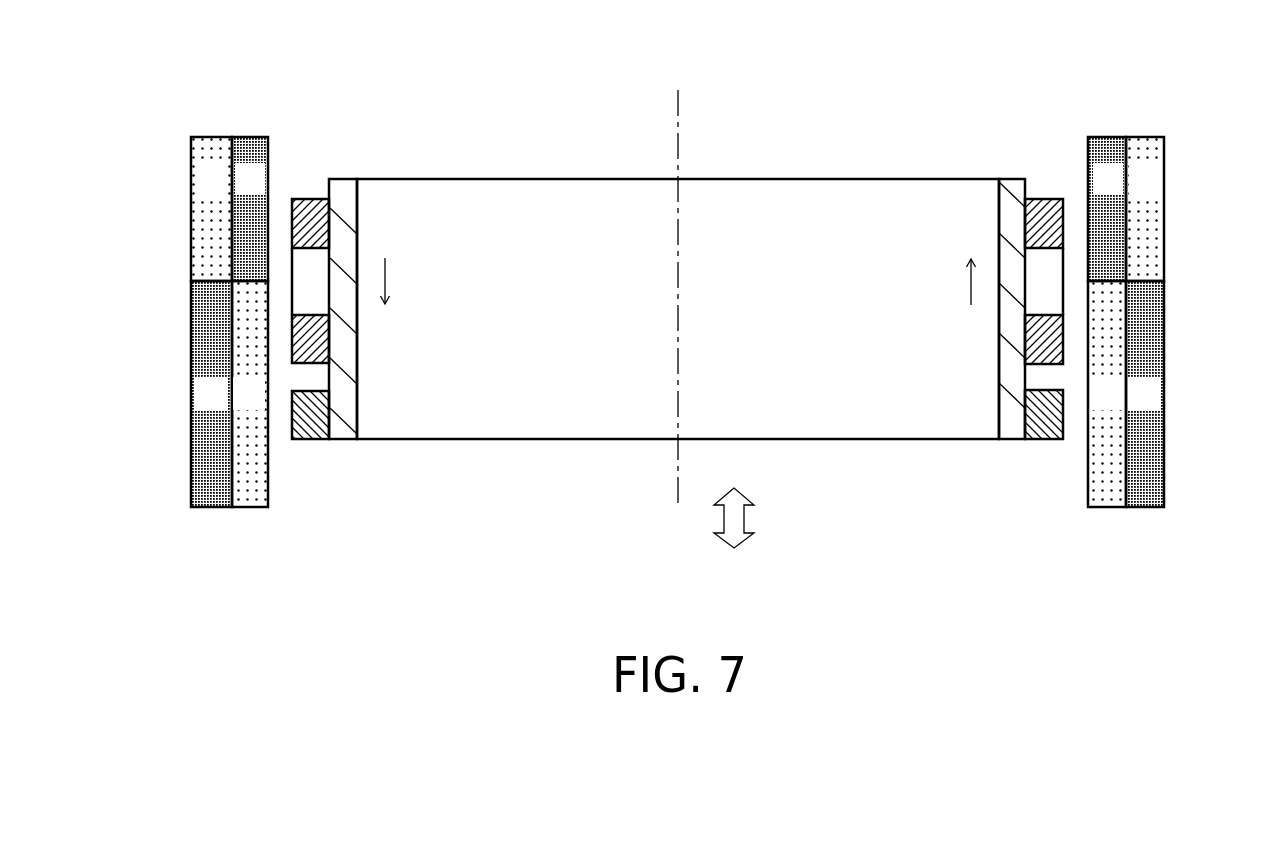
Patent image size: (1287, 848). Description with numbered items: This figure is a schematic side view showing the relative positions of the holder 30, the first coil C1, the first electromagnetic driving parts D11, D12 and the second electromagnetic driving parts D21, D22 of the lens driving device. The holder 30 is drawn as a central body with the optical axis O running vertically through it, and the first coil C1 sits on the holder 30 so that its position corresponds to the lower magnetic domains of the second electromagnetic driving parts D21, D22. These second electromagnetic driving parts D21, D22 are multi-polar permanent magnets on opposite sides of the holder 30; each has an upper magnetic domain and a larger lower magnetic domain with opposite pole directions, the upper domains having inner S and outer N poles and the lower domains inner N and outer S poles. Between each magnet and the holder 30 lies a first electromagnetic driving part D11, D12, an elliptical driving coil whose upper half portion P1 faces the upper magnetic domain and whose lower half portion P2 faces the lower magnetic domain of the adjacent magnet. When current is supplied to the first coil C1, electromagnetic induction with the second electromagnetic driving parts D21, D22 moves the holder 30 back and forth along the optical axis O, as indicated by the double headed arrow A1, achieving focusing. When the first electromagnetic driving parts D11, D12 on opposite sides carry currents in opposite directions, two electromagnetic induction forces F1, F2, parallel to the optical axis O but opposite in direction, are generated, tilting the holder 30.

The holder 30 is at (837, 177).
The optical axis O is at (678, 281).
The double headed arrow A1 is at (745, 518).
The electromagnetic induction force F1 is at (407, 281).
The electromagnetic induction force F2 is at (949, 282).
The first coil C1 is at (1044, 443).
The upper half portion P1 is at (292, 230).
The lower half portion P2 is at (293, 348).
The first electromagnetic driving part D11 is at (311, 193).
The first electromagnetic driving part D12 is at (677, 339).
The second electromagnetic driving part D21 is at (190, 133).
The second electromagnetic driving part D22 is at (677, 394).